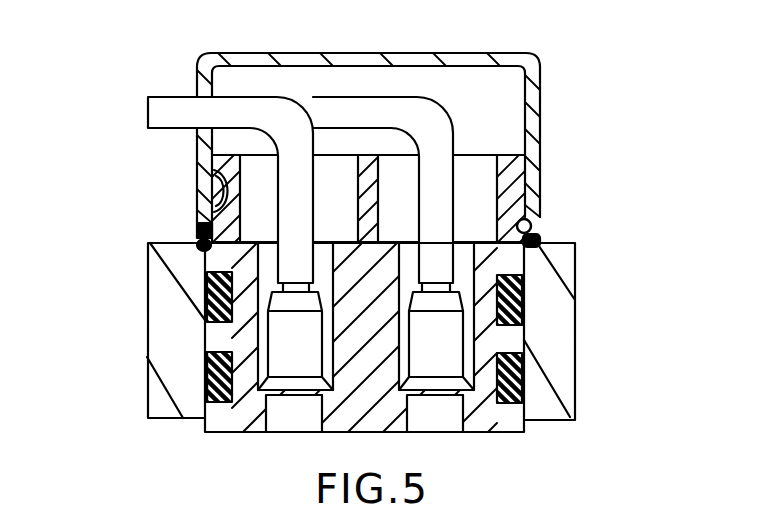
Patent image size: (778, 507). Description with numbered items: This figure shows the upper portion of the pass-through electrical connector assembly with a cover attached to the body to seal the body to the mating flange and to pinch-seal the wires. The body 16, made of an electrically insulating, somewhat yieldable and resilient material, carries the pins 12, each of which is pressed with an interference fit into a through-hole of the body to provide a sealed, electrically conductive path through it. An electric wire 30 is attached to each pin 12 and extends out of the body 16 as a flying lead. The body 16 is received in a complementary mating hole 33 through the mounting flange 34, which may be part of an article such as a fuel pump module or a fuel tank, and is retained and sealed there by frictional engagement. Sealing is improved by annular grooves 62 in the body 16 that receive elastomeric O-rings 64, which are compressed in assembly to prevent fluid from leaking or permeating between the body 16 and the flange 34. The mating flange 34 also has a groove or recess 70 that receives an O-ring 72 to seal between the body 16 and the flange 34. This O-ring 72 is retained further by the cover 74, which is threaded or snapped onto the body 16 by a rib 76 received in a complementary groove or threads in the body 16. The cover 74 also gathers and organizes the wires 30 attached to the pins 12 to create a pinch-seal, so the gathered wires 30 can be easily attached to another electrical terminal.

The pin 12 is at (250, 408).
The body 16 is at (510, 182).
The electric wire 30 is at (415, 122).
The mating hole 33 is at (522, 428).
The mounting flange 34 is at (572, 268).
The annular groove 62 is at (205, 400).
The O-ring 64 is at (207, 362).
The groove or recess 70 is at (197, 245).
The O-ring 72 is at (197, 228).
The cover 74 is at (530, 62).
The rib 76 is at (212, 168).